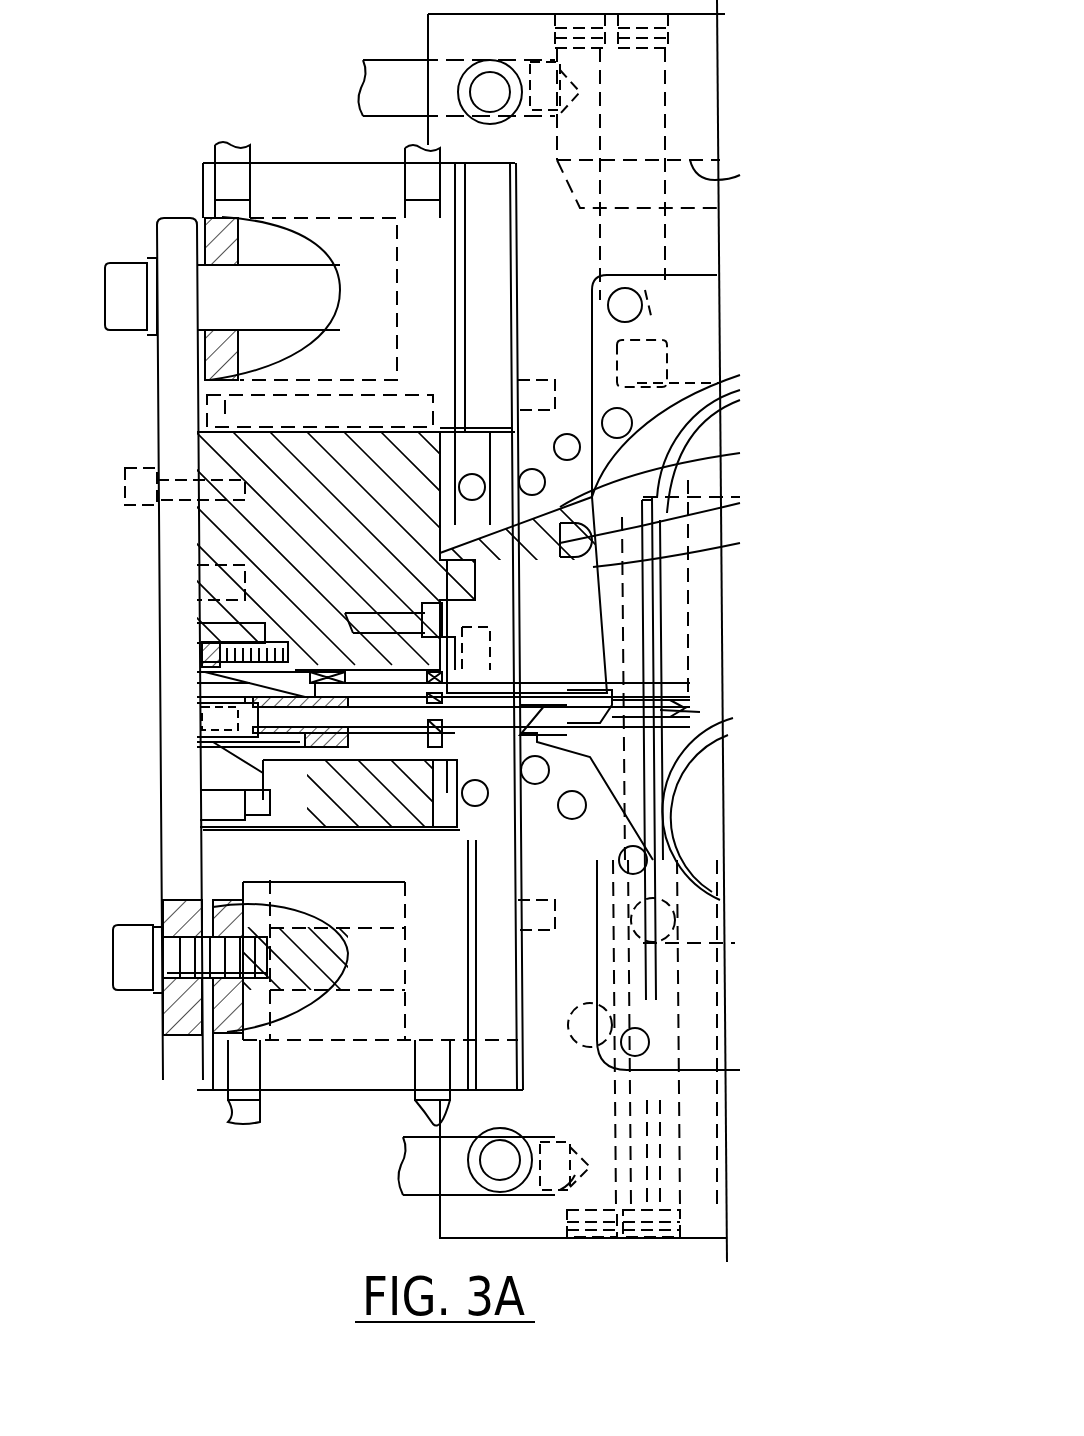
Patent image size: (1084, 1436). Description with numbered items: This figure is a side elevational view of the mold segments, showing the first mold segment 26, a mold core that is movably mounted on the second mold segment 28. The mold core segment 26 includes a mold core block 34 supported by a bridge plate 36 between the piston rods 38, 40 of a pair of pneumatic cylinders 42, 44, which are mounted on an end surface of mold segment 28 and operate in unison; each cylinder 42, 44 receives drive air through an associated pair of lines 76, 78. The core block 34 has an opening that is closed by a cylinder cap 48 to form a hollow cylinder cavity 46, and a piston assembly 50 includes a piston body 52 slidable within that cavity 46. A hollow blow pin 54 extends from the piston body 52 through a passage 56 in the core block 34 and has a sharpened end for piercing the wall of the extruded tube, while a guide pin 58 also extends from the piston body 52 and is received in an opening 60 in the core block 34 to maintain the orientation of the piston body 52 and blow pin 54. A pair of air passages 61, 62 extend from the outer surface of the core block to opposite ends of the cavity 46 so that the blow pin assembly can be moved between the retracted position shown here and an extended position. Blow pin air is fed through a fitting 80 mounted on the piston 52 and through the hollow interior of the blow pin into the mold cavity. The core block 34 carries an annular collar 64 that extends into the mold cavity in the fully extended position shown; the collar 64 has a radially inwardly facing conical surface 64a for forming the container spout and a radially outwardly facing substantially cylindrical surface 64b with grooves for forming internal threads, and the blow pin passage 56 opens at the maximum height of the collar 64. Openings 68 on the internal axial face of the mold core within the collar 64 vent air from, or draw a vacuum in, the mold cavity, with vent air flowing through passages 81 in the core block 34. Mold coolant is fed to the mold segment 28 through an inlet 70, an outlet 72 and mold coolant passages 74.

The first mold segment 26 is at (197, 515).
The second mold segment 28 is at (425, 38).
The mold core block 34 is at (275, 466).
The bridge plate 36 is at (162, 378).
The piston rod 38 is at (296, 306).
The piston rod 40 is at (190, 1025).
The pneumatic cylinder 42 is at (342, 170).
The pneumatic cylinder 44 is at (220, 1050).
The cylinder cavity 46 is at (387, 758).
The cylinder cap 48 is at (215, 752).
The piston assembly 50 is at (312, 668).
The piston body 52 is at (197, 682).
The blow pin 54 is at (657, 733).
The passage 56 is at (655, 704).
The guide pin 58 is at (470, 680).
The opening 60 is at (528, 682).
The air passage 61 is at (215, 820).
The air passage 62 is at (407, 797).
The annular collar 64 is at (717, 505).
The conical surface 64a is at (717, 548).
The cylindrical surface 64b is at (717, 462).
The openings 68 is at (444, 612).
The inlet 70 is at (370, 74).
The outlet 72 is at (705, 395).
The mold coolant passages 74 is at (730, 176).
The line 76 is at (242, 154).
The line 78 is at (416, 154).
The fitting 80 is at (197, 713).
The passages 81 is at (440, 624).